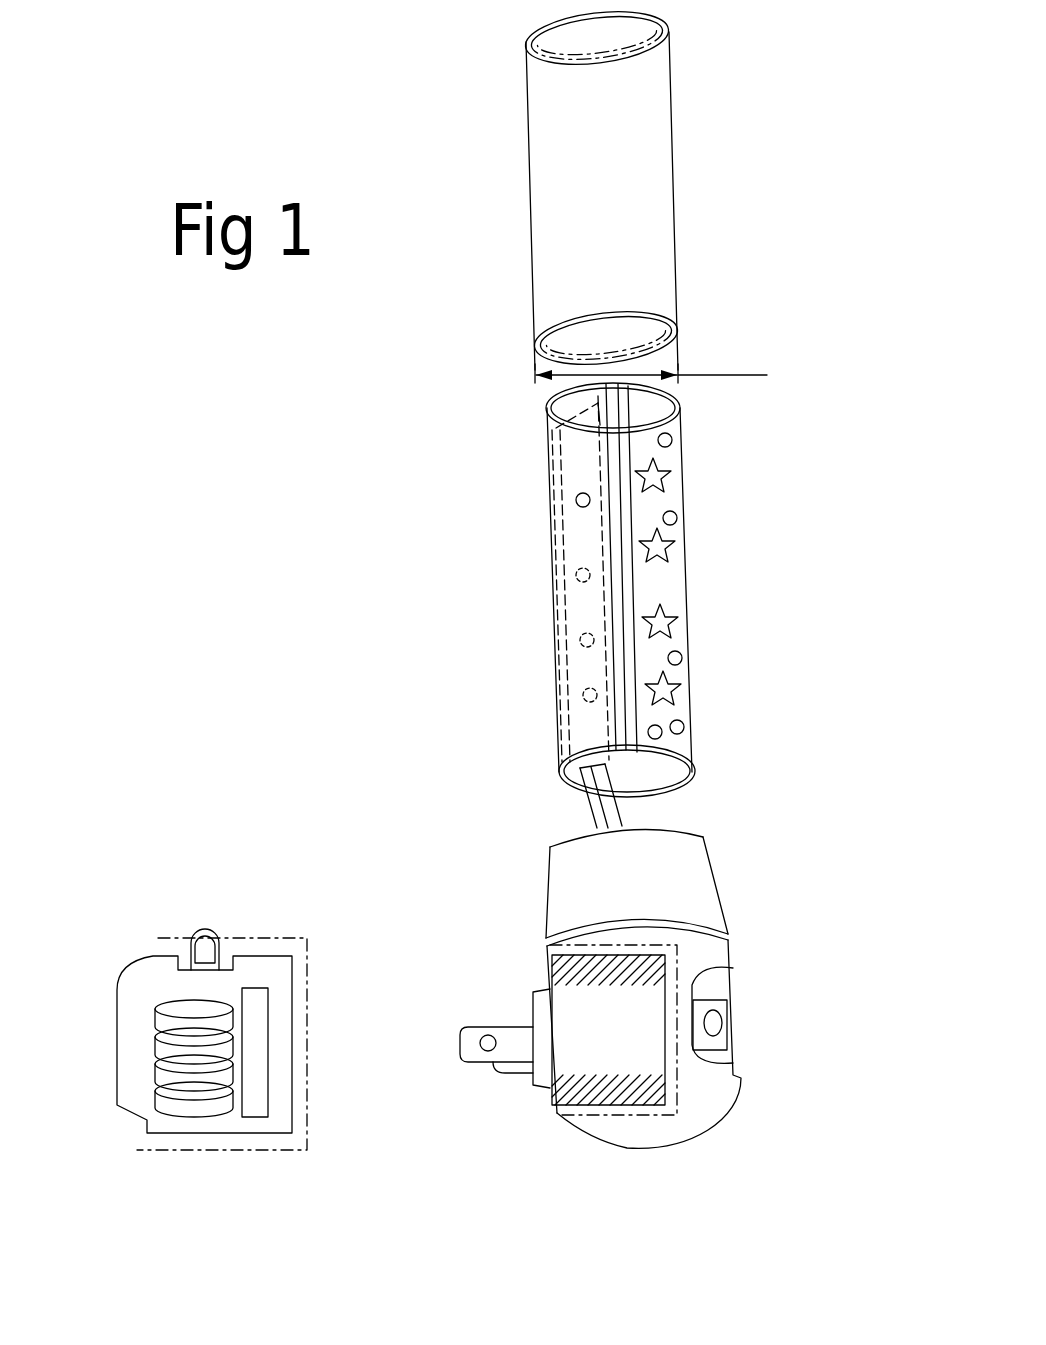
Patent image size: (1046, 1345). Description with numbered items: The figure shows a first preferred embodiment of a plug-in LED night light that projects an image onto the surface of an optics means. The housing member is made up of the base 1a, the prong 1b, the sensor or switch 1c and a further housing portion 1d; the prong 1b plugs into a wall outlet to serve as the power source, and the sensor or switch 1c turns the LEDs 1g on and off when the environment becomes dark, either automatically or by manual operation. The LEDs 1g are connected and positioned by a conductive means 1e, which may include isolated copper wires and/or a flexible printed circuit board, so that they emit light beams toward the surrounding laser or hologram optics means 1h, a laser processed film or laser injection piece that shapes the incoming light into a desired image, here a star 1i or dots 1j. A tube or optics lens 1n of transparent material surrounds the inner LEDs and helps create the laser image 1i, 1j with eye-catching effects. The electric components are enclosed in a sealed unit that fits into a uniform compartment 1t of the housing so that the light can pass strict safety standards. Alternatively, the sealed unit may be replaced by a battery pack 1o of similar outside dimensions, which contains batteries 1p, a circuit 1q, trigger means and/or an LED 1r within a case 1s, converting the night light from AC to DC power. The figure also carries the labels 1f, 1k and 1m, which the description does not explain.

The base 1a is at (715, 952).
The prong 1b is at (498, 1077).
The sensor or switch 1c is at (713, 1023).
The housing member 1d is at (667, 873).
The printed circuit board 1e is at (575, 450).
The cable 1f is at (582, 798).
The LED 1g is at (578, 497).
The optics means 1h is at (684, 406).
The star image 1i is at (670, 694).
The dots image 1j is at (680, 652).
The slot 1k is at (634, 744).
The diameter dimension 1m is at (651, 358).
The optics lens 1n is at (557, 150).
The battery pack 1o is at (195, 937).
The batteries 1p is at (195, 1115).
The circuit 1q is at (260, 1123).
The LED 1r is at (215, 950).
The case 1s is at (145, 988).
The uniform compartment 1t is at (575, 1120).